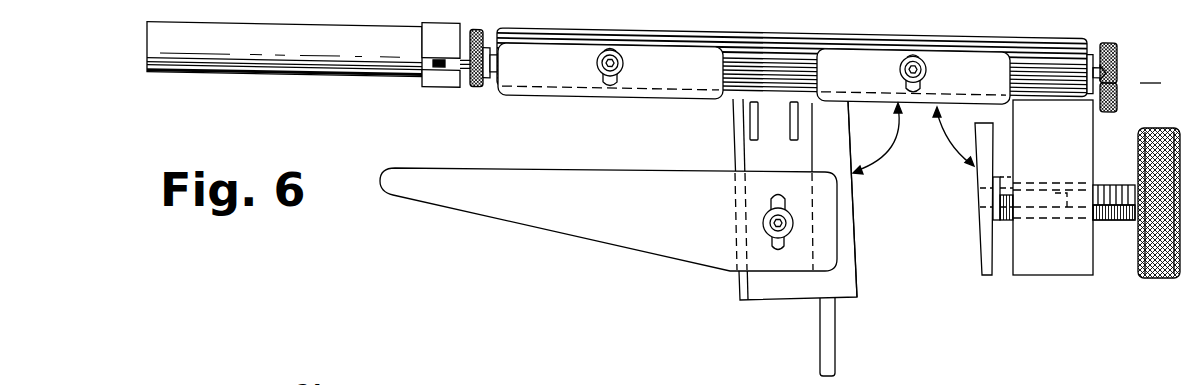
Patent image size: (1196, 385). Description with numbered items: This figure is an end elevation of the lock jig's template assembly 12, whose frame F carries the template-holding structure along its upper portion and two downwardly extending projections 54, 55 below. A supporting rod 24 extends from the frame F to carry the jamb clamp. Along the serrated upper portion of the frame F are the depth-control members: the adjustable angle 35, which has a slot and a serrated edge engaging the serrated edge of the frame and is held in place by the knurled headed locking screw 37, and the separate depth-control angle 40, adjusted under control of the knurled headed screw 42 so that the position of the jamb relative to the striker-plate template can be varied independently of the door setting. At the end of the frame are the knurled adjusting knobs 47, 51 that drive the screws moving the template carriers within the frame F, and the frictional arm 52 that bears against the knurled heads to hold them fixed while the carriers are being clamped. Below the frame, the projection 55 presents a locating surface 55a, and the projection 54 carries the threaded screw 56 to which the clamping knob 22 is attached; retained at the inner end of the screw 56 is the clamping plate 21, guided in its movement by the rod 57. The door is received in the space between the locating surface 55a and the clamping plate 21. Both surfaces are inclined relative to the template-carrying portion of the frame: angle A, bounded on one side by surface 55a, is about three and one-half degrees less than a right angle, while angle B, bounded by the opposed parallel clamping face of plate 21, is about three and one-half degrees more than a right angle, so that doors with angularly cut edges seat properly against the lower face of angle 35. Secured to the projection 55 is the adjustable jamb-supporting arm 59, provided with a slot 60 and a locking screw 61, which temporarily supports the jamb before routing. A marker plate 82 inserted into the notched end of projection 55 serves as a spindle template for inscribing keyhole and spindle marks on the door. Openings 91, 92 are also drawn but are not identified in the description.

The supporting rod 24 is at (305, 73).
The knurled head 51 is at (478, 90).
The depth-control angle 40 is at (567, 88).
The knurled headed screw 42 is at (623, 64).
The frame F is at (767, 33).
The adjustable angle 35 is at (967, 53).
The knurled headed locking screw 37 is at (899, 66).
The adjusting knob 47 is at (1118, 43).
The frictional arm 52 is at (1118, 83).
The template assembly 12 is at (1152, 73).
The slot 91 is at (752, 120).
The slot 92 is at (798, 120).
The slot 60 is at (773, 197).
The locking screw 61 is at (766, 224).
The jamb-supporting arm 59 is at (598, 230).
The projection 55 is at (787, 303).
The locating surface 55a is at (853, 218).
The marker plate 82 is at (836, 353).
The clamping plate 21 is at (978, 245).
The rod 57 is at (1000, 196).
The threaded screw 56 is at (1120, 185).
The projection 54 is at (1070, 272).
The clamping knob 22 is at (1158, 280).
The angle A is at (880, 138).
The angle B is at (953, 136).